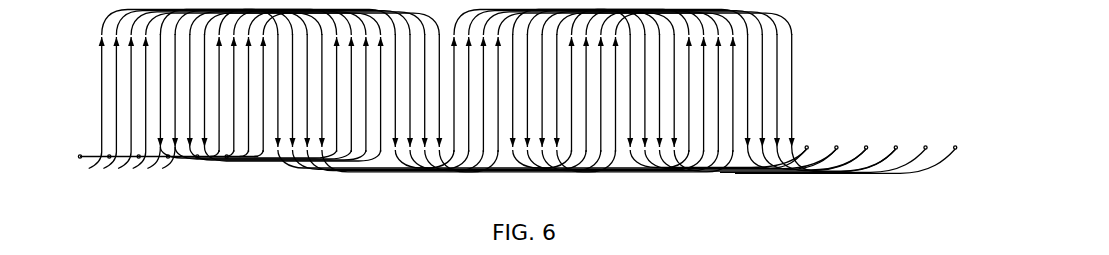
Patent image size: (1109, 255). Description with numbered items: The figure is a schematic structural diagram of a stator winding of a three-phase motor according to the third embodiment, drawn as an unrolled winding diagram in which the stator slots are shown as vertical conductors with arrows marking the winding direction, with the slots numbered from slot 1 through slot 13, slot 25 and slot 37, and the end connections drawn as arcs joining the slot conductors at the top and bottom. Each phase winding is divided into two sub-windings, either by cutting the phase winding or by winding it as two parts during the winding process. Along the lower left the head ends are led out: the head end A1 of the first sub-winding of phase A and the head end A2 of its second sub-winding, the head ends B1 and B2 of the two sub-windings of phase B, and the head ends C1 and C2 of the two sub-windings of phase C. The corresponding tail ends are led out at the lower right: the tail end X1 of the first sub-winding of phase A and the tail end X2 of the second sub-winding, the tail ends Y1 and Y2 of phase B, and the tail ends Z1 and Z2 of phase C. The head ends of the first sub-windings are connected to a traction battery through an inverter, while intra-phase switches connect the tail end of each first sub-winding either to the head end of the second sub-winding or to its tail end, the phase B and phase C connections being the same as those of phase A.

The stator slot 1 is at (97, 94).
The stator slot 13 is at (270, 90).
The stator slot 25 is at (446, 94).
The stator slot 37 is at (622, 90).
The head end of the first sub-winding of phase A A1 is at (88, 166).
The head end of the second sub-winding of phase A A2 is at (110, 166).
The head end of the first sub-winding of phase B B1 is at (132, 166).
The head end of the second sub-winding of phase B B2 is at (154, 166).
The head end of the first sub-winding of phase C C1 is at (175, 163).
The head end of the second sub-winding of phase C C2 is at (198, 163).
The tail end of the first sub-winding of phase A X1 is at (730, 152).
The tail end of the second sub-winding of phase A X2 is at (753, 153).
The tail end of the first sub-winding of phase B Y1 is at (775, 154).
The tail end of the second sub-winding of phase B Y2 is at (797, 154).
The tail end of the first sub-winding of phase C Z1 is at (835, 154).
The tail end of the second sub-winding of phase C Z2 is at (857, 155).